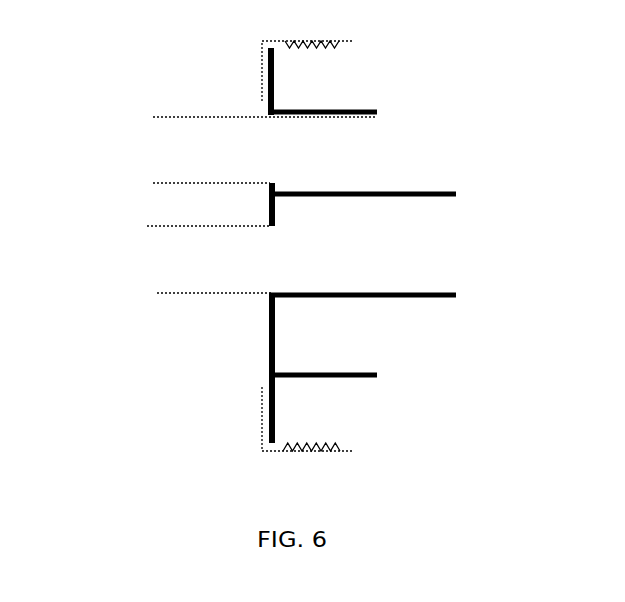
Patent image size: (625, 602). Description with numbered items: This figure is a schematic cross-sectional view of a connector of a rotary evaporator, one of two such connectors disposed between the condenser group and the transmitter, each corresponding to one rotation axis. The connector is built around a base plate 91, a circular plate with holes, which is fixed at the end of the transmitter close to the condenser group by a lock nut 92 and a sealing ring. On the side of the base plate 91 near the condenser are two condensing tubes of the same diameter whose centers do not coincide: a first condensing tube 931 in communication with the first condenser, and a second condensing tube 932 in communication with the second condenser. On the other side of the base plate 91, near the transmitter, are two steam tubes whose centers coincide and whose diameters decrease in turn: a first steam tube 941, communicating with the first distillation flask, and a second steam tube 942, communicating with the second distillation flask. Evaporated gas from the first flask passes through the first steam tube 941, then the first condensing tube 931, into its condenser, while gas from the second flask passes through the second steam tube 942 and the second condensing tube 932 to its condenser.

The first condensing tube 931 is at (187, 117).
The first steam tube 941 is at (300, 111).
The second condensing tube 932 is at (180, 225).
The second steam tube 942 is at (428, 193).
The base plate 91 is at (267, 382).
The lock nut 92 is at (262, 438).